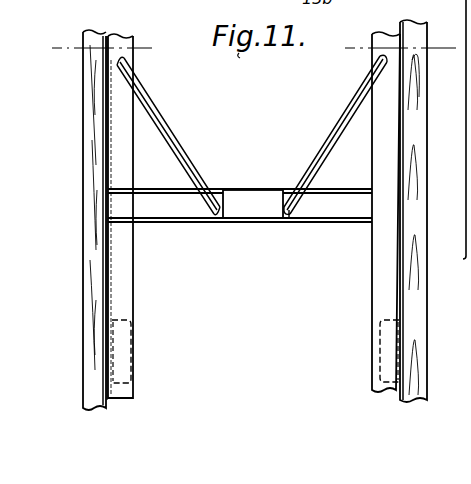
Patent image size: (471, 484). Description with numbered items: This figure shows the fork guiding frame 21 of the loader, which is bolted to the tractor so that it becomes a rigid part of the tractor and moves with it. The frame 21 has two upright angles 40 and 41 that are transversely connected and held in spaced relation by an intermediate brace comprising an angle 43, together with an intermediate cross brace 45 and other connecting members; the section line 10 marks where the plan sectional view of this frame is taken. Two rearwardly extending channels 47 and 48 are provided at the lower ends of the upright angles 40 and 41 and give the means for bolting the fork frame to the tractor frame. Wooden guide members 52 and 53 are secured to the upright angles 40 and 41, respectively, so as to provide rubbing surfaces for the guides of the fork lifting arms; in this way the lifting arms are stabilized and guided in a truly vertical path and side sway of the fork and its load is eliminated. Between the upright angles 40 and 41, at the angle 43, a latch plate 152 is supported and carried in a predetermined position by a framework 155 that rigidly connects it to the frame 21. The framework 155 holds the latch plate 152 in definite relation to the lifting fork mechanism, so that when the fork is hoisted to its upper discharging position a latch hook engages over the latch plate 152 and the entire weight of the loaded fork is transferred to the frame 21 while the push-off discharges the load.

The section line 10 is at (64, 48).
The intermediate cross brace 45 is at (440, 47).
The wooden guide member 53 is at (93, 236).
The upright angle 41 is at (123, 292).
The upright angle 40 is at (373, 293).
The wooden guide member 52 is at (412, 300).
The intermediate brace angle 43 is at (326, 212).
The latch plate 152 is at (255, 216).
The framework 155 is at (207, 210).
The rearwardly extending channel 48 is at (132, 352).
The rearwardly extending channel 47 is at (380, 352).
The frame 21 is at (126, 414).